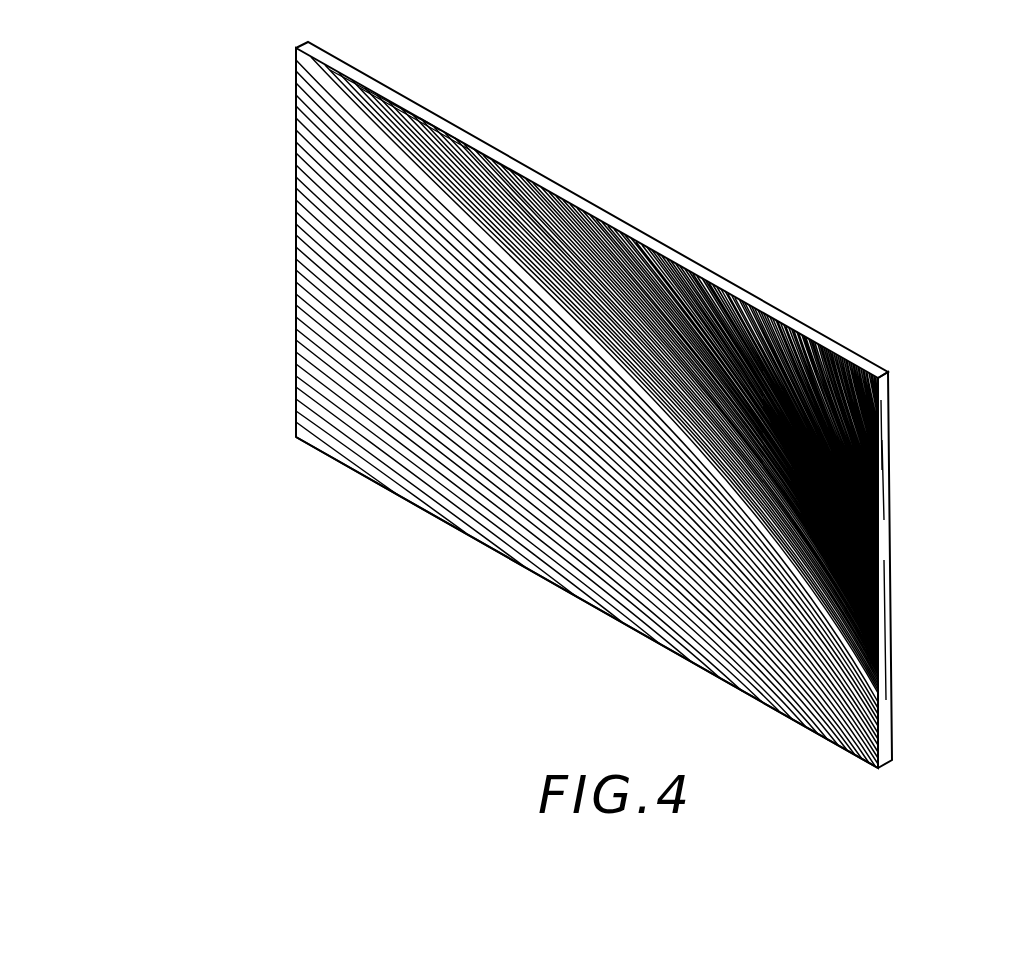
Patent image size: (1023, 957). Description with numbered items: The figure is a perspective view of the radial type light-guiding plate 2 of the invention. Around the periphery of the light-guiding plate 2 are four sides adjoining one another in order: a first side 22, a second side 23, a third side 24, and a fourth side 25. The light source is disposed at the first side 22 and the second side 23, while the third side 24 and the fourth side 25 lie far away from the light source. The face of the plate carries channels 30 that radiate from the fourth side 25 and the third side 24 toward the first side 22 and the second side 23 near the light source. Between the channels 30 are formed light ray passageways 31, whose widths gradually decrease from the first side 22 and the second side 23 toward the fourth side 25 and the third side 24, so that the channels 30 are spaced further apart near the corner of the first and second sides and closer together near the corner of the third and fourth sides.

The light-guiding plate 2 is at (260, 331).
The first side 22 is at (296, 78).
The second side 23 is at (533, 176).
The third side 24 is at (882, 548).
The fourth side 25 is at (523, 565).
The channels 30 is at (336, 216).
The light ray passageways 31 is at (336, 181).